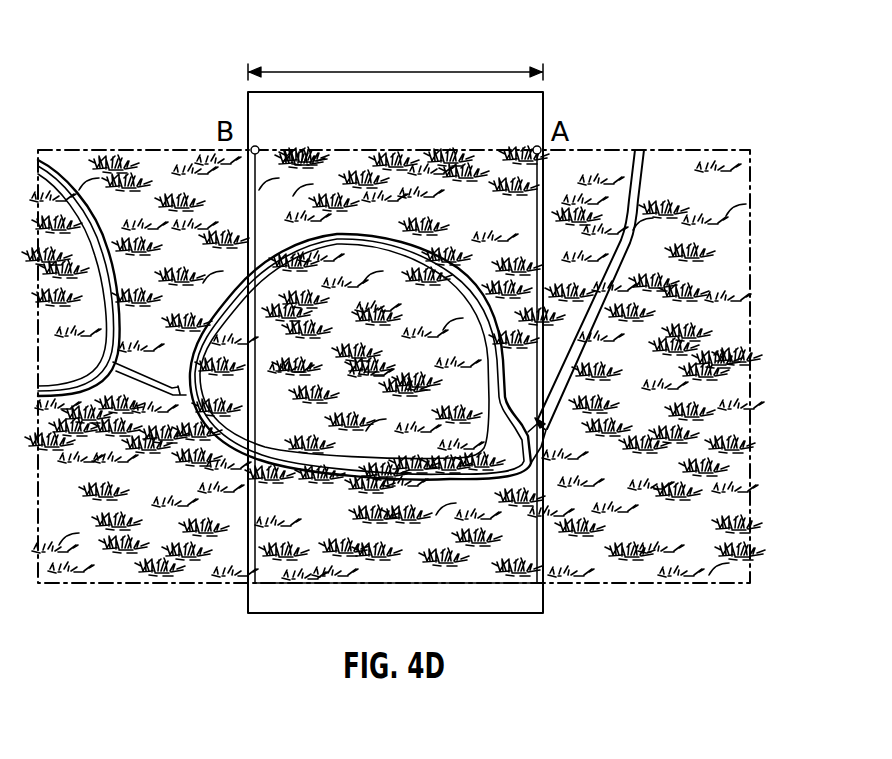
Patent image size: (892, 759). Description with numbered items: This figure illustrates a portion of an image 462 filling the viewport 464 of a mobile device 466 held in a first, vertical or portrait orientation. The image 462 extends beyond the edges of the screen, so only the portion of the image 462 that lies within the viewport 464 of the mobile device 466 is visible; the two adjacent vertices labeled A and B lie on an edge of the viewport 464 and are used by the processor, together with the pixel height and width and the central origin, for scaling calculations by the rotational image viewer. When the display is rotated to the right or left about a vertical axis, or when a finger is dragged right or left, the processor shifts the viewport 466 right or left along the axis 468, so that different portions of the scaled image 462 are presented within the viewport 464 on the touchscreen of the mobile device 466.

The image 462 is at (727, 148).
The viewport 464 is at (507, 148).
The mobile device 466 is at (482, 107).
The axis 468 is at (378, 71).